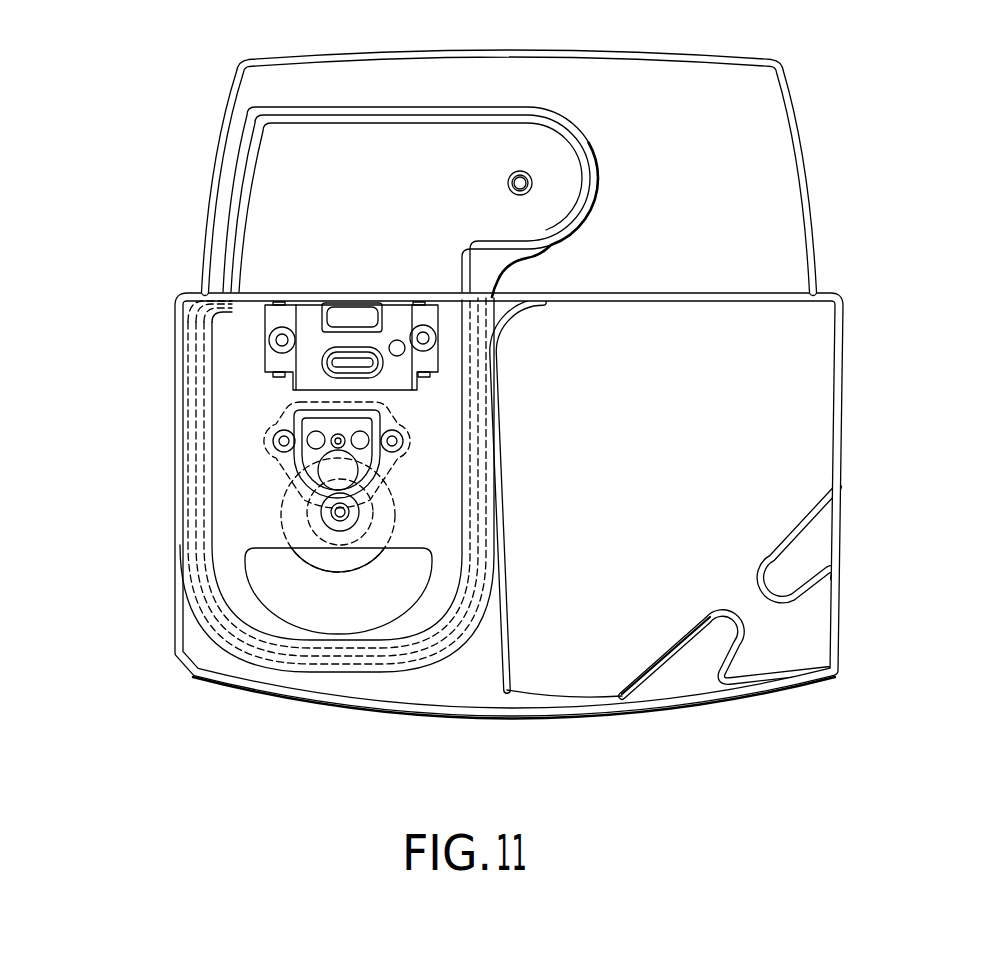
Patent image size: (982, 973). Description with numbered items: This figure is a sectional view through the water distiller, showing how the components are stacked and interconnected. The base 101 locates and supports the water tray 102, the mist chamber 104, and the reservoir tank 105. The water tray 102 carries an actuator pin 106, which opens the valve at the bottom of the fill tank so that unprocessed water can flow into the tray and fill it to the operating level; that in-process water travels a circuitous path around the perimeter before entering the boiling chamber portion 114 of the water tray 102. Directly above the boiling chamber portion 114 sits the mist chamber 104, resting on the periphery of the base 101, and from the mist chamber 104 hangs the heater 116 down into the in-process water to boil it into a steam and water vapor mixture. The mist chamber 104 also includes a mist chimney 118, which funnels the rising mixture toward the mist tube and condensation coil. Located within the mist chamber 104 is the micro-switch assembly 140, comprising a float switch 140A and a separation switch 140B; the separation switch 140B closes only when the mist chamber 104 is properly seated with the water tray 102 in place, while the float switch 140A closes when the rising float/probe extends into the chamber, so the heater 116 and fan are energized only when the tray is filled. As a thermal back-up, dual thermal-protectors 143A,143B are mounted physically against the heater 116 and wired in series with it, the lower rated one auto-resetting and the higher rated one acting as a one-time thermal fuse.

The base 101 is at (803, 112).
The water tray 102 is at (248, 97).
The mist chamber 104 is at (171, 473).
The reservoir tank 105 is at (660, 702).
The actuator pin 106 is at (523, 166).
The boiling chamber portion 114 is at (372, 606).
The heater 116 is at (294, 560).
The mist chimney 118 is at (302, 632).
The micro-switch assembly 140 is at (298, 358).
The float switch 140A is at (334, 311).
The separation switch 140B is at (321, 374).
The dual thermal-protectors 143A,143B is at (324, 471).